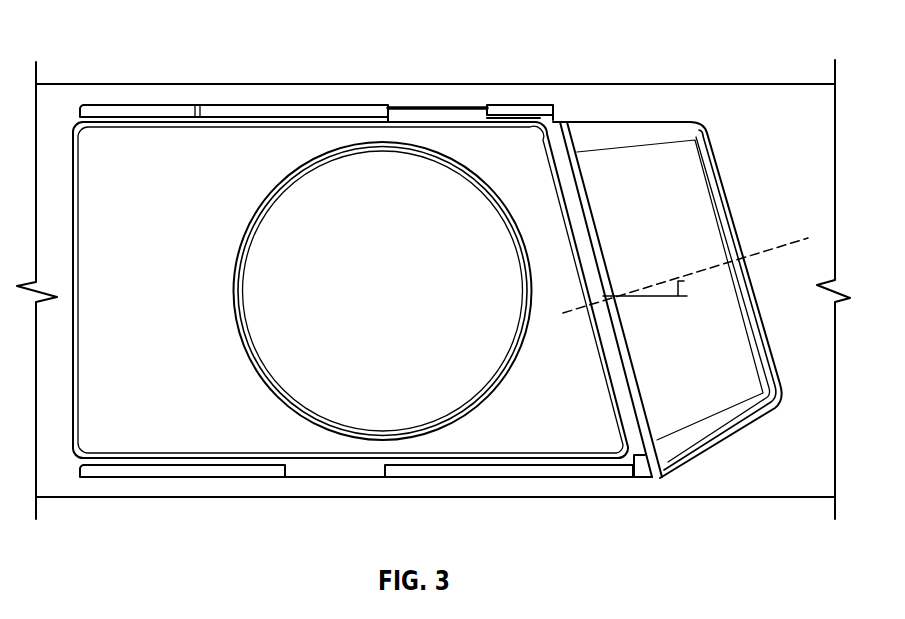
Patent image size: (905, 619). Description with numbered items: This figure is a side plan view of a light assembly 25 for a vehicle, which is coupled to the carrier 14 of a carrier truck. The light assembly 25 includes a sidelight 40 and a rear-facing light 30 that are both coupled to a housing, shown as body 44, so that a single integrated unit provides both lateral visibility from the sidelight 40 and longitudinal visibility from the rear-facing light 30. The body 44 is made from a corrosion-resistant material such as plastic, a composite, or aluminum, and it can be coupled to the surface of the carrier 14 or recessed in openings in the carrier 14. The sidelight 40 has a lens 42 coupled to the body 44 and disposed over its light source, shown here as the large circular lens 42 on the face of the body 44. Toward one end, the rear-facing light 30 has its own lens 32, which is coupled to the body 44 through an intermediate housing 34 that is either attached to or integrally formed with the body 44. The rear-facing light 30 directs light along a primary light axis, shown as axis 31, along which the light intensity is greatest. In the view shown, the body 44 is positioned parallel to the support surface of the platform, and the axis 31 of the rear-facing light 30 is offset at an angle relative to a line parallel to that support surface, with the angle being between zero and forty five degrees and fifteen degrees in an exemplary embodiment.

The carrier 14 is at (50, 108).
The light assembly 25 is at (174, 58).
The body 44 is at (237, 143).
The lens 42 is at (338, 182).
The sidelight 40 is at (473, 431).
The rear-facing light 30 is at (666, 119).
The axis 31 is at (763, 254).
The lens 32 is at (763, 322).
The intermediate housing 34 is at (697, 403).